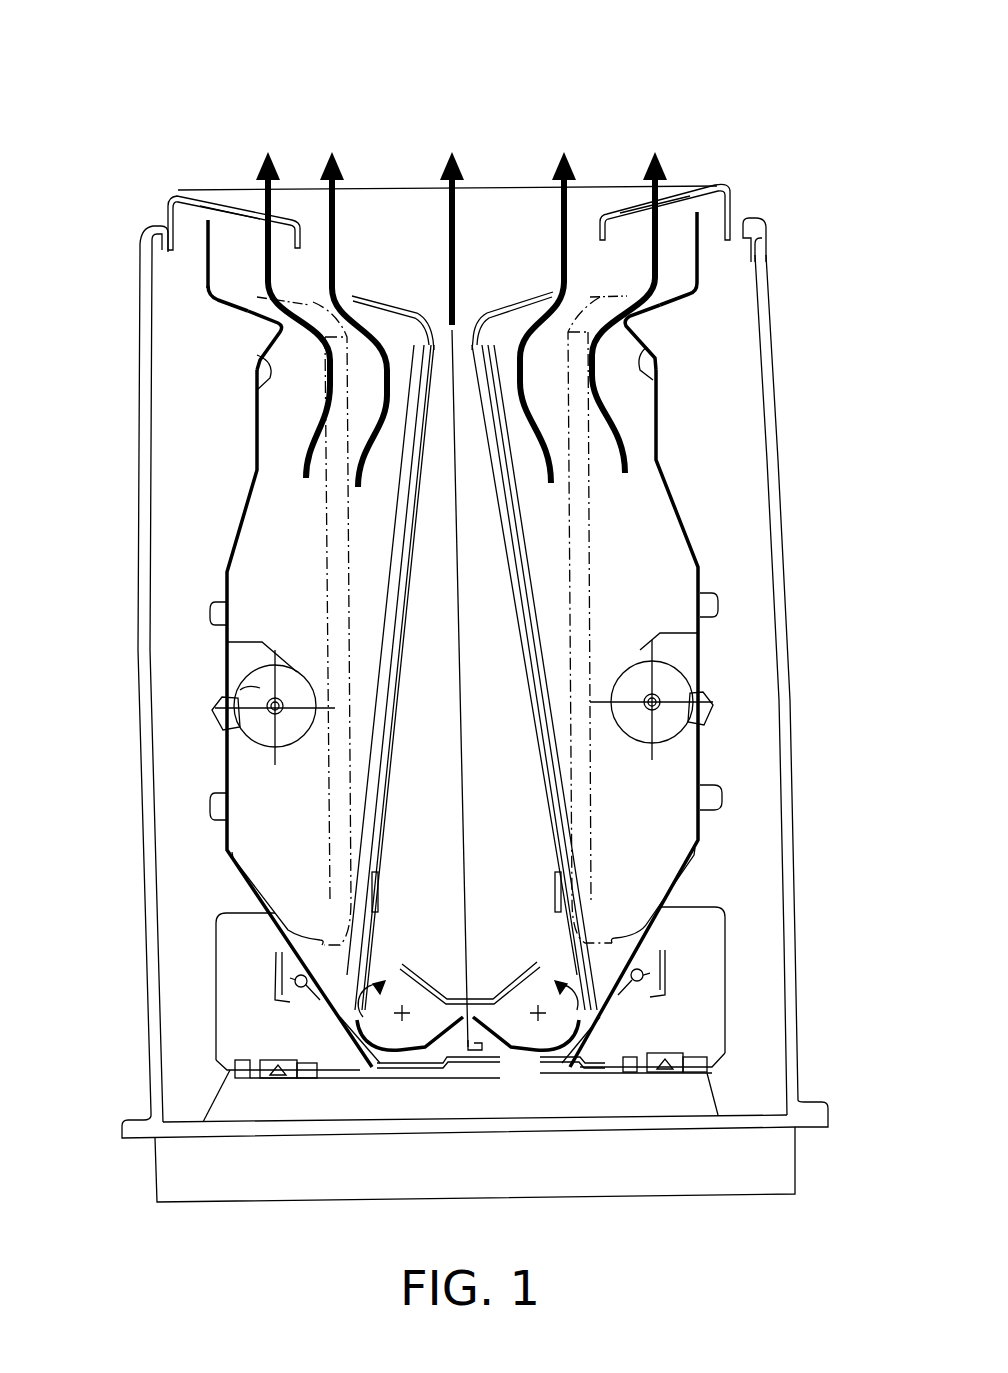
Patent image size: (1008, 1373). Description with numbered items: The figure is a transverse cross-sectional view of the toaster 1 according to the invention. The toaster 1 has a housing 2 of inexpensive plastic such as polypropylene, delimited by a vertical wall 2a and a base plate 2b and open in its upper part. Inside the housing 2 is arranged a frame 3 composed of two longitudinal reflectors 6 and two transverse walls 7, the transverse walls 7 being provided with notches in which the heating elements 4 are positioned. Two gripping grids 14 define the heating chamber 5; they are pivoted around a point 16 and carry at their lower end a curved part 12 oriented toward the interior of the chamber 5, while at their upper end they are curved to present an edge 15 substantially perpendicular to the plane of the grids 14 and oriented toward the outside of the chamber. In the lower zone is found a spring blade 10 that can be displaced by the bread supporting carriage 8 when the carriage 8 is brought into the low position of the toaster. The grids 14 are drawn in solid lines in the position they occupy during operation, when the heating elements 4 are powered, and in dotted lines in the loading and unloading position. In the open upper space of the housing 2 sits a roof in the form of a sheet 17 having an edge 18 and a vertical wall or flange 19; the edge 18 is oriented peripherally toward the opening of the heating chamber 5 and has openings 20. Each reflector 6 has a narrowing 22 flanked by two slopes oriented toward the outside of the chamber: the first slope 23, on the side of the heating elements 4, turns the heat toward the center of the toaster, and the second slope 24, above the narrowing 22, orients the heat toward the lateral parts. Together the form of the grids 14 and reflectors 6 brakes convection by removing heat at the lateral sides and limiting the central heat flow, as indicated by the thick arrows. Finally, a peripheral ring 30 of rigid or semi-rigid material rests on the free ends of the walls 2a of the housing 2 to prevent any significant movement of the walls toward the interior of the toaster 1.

The toaster 1 is at (148, 140).
The housing 2 is at (110, 524).
The vertical wall 2a is at (145, 796).
The base plate 2b is at (785, 1162).
The frame 3 is at (206, 978).
The heating elements 4 is at (258, 690).
The heating chamber 5 is at (440, 836).
The longitudinal reflectors 6 is at (242, 517).
The transverse walls 7 is at (257, 597).
The bread supporting carriage 8 is at (496, 997).
The spring blade 10 is at (422, 1040).
The curved part 12 is at (345, 1038).
The gripping grids 14 is at (395, 728).
The edge 15 is at (512, 303).
The pivot point 16 is at (293, 980).
The sheet 17 is at (148, 217).
The edge 18 is at (213, 197).
The vertical wall or flange 19 is at (728, 185).
The openings 20 is at (245, 210).
The narrowing 22 is at (280, 330).
The first slope 23 is at (267, 372).
The second slope 24 is at (243, 307).
The ring 30 is at (755, 217).